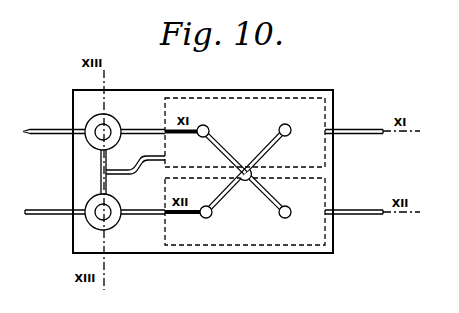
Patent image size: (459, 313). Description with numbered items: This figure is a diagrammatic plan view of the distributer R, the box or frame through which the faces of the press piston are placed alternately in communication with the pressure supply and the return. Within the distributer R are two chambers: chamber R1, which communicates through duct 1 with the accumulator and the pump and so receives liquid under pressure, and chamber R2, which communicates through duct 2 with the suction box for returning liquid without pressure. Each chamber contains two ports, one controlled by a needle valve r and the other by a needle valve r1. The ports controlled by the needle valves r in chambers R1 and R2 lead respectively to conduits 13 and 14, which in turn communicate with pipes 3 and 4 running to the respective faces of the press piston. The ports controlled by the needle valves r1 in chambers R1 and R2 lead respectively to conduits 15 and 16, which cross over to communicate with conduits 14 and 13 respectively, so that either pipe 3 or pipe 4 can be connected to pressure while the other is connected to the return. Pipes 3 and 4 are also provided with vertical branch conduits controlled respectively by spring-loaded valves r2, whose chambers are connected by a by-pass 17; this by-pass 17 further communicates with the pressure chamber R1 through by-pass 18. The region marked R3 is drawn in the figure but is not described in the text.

The duct 1 is at (348, 131).
The duct 2 is at (348, 212).
The pipe 3 is at (44, 131).
The pipe 4 is at (53, 212).
The conduit 13 is at (144, 131).
The conduit 14 is at (141, 212).
The conduit 15 is at (266, 151).
The conduit 16 is at (264, 193).
The by-pass 17 is at (101, 178).
The by-pass 18 is at (134, 167).
The distributer R is at (310, 95).
The chamber R1 is at (257, 113).
The chamber R2 is at (257, 233).
The left compartment R3 is at (152, 200).
The needle valve r is at (209, 130).
The needle valve r1 is at (290, 129).
The spring-loaded valve r2 is at (109, 129).